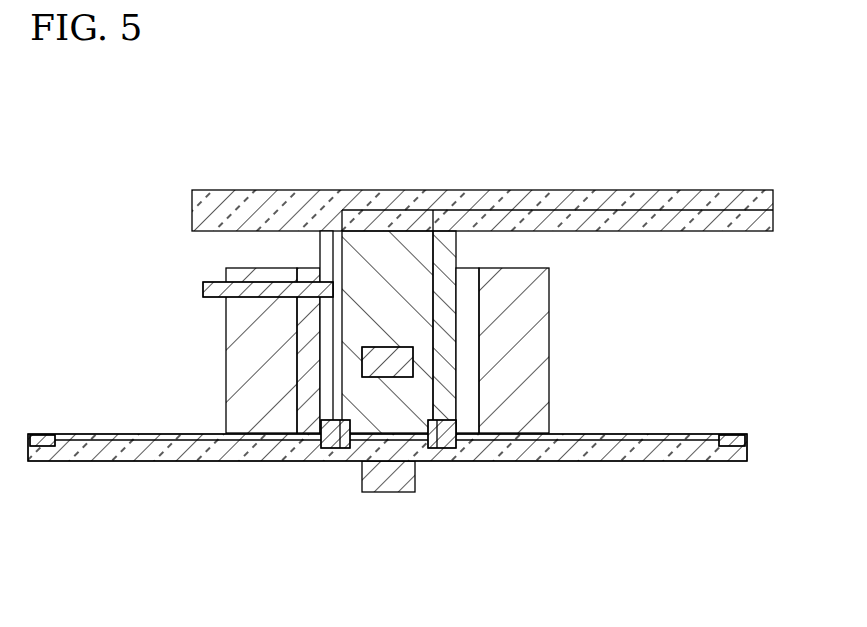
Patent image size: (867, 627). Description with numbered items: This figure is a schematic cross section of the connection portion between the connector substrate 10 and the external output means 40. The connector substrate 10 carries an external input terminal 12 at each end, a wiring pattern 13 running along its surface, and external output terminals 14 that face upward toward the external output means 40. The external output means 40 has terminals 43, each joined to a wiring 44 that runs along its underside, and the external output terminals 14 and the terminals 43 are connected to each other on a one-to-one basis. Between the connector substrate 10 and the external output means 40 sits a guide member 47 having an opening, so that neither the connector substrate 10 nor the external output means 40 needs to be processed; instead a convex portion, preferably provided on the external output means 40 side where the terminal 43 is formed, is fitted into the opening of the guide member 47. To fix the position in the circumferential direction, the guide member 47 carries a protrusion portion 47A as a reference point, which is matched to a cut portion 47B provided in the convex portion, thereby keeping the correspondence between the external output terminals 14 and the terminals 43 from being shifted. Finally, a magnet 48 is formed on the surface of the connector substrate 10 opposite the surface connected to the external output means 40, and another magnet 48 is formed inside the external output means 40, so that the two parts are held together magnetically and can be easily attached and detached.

The connector substrate 10 is at (681, 466).
The external input terminal 12 is at (38, 436).
The wiring pattern 13 is at (180, 440).
The external output terminal 14 is at (340, 442).
The external output means 40 is at (730, 180).
The terminal 43 is at (325, 427).
The wiring 44 is at (672, 212).
The guide member 47 is at (530, 340).
The protrusion portion 47A is at (213, 289).
The cut portion 47B is at (328, 277).
The magnet 48 is at (387, 360).